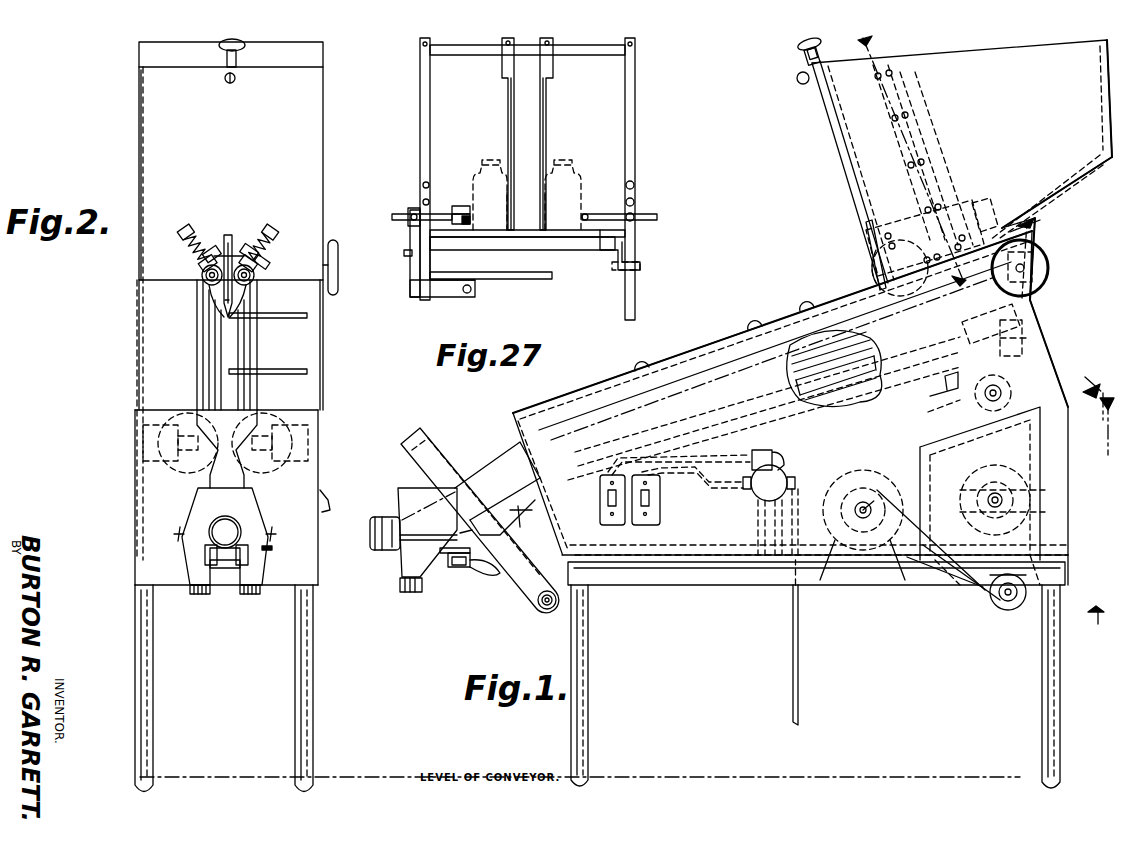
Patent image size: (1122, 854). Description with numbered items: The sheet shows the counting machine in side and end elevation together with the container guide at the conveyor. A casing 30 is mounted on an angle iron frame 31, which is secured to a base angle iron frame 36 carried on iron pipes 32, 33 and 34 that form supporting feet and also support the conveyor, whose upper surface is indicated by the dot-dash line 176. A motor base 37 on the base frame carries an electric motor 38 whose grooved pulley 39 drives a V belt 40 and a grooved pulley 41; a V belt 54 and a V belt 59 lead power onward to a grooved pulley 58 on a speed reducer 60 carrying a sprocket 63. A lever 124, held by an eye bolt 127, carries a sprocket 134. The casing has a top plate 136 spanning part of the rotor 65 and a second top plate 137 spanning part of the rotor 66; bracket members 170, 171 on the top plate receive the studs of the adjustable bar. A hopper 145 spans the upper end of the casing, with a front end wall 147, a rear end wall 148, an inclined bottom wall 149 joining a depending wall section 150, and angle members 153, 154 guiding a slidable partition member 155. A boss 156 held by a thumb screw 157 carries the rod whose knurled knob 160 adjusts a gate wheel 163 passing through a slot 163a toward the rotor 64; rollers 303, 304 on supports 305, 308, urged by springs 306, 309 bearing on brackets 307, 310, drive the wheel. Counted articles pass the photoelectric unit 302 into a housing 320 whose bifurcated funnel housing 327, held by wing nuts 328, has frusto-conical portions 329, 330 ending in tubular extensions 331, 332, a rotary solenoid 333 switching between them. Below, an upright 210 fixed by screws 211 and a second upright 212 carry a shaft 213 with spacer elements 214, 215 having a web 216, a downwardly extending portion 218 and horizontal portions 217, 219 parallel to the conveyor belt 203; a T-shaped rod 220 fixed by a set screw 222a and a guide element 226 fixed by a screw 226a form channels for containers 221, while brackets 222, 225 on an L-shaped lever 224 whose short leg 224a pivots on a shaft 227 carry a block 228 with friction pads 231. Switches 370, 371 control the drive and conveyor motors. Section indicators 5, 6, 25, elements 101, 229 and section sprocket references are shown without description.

In FIG. 1, the section line 5 is at (1098, 511).
In FIG. 1, the section line 6 is at (1056, 319).
In FIG. 1, the section line 25 is at (917, 157).
In FIG. 1, the casing 30 is at (676, 368).
In FIG. 1, the angle iron frame 31 is at (672, 538).
In FIG. 1, the iron pipe 32 is at (1054, 690).
In FIG. 2, the iron pipe 33 is at (308, 670).
In FIG. 1, the iron pipe 33 is at (586, 672).
In FIG. 2, the iron pipe 34 is at (148, 676).
In FIG. 1, the base angle iron frame 36 is at (676, 583).
In FIG. 1, the motor base 37 is at (842, 572).
In FIG. 1, the electric motor 38 is at (862, 516).
In FIG. 1, the grooved pulley 39 is at (872, 492).
In FIG. 1, the V belt 40 is at (980, 596).
In FIG. 1, the grooved pulley 41 is at (1014, 608).
In FIG. 1, the V belt 54 is at (1030, 528).
In FIG. 1, the grooved pulley 58 is at (975, 400).
In FIG. 1, the V belt 59 is at (1012, 462).
In FIG. 1, the speed reducer 60 is at (930, 396).
In FIG. 1, the sprocket 63 is at (1044, 346).
In FIG. 2, the rotor 64 is at (247, 356).
In FIG. 2, the rotor 65 is at (208, 360).
In FIG. 1, the rotor 66 is at (815, 332).
In FIG. 2, the handle 101 is at (339, 258).
In FIG. 1, the handle 101 is at (1050, 268).
In FIG. 1, the lever 124 is at (1002, 312).
In FIG. 1, the eye bolt 127 is at (1010, 340).
In FIG. 1, the sprocket 134 is at (1034, 300).
In FIG. 2, the top plate 136 is at (316, 340).
In FIG. 1, the top plate 136 is at (718, 338).
In FIG. 2, the second top plate 137 is at (140, 384).
In FIG. 2, the hopper 145 is at (316, 118).
In FIG. 1, the hopper 145 is at (940, 52).
In FIG. 2, the front end wall 147 is at (316, 146).
In FIG. 1, the front end wall 147 is at (818, 104).
In FIG. 1, the rear end wall 148 is at (1100, 80).
In FIG. 1, the inclined bottom wall 149 is at (1060, 178).
In FIG. 1, the depending wall section 150 is at (980, 225).
In FIG. 1, the angle member 153 is at (903, 154).
In FIG. 1, the angle member 154 is at (906, 124).
In FIG. 1, the partition member 155 is at (898, 86).
In FIG. 1, the boss 156 is at (816, 50).
In FIG. 2, the thumb screw 157 is at (236, 78).
In FIG. 1, the thumb screw 157 is at (800, 74).
In FIG. 2, the knurled knob 160 is at (244, 50).
In FIG. 1, the knurled knob 160 is at (800, 44).
In FIG. 2, the gate wheel 163 is at (232, 240).
In FIG. 1, the gate wheel 163 is at (866, 256).
In FIG. 2, the slot 163a is at (230, 238).
In FIG. 2, the bracket member 170 is at (270, 374).
In FIG. 1, the bracket member 170 is at (618, 376).
In FIG. 2, the bracket member 171 is at (272, 318).
In FIG. 1, the bracket member 171 is at (774, 324).
In FIG. 1, the line 176 is at (360, 772).
In FIG. 27, the conveyor belt 203 is at (516, 236).
In FIG. 27, the upright 210 is at (420, 158).
In FIG. 27, the screws 211 is at (640, 266).
In FIG. 27, the second upright 212 is at (636, 157).
In FIG. 27, the shaft 213 is at (584, 58).
In FIG. 27, the spacer element 214 is at (552, 50).
In FIG. 27, the spacer element 215 is at (506, 70).
In FIG. 27, the web 216 is at (546, 150).
In FIG. 27, the horizontal portion 217 is at (561, 211).
In FIG. 27, the downwardly extending portion 218 is at (508, 136).
In FIG. 27, the horizontal portion 219 is at (524, 211).
In FIG. 27, the T-shaped rod 220 is at (586, 212).
In FIG. 27, the containers 221 is at (470, 180).
In FIG. 27, the bracket 222 is at (658, 216).
In FIG. 27, the set screw 222a is at (636, 186).
In FIG. 27, the L-shaped lever 224 is at (413, 238).
In FIG. 27, the short leg 224a is at (446, 290).
In FIG. 27, the bracket 225 is at (406, 207).
In FIG. 27, the guide element 226 is at (470, 220).
In FIG. 27, the screw 226a is at (422, 185).
In FIG. 27, the shaft 227 is at (472, 290).
In FIG. 27, the block 228 is at (452, 208).
In FIG. 27, the nut 229 is at (408, 222).
In FIG. 27, the friction pads 231 is at (485, 217).
In FIG. 1, the photoelectric unit 302 is at (440, 458).
In FIG. 2, the roller 303 is at (255, 278).
In FIG. 1, the roller 303 is at (892, 290).
In FIG. 2, the roller 304 is at (201, 276).
In FIG. 2, the support 305 is at (207, 246).
In FIG. 2, the spring 306 is at (200, 232).
In FIG. 2, the bracket 307 is at (182, 224).
In FIG. 2, the support 308 is at (264, 258).
In FIG. 2, the spring 309 is at (278, 232).
In FIG. 2, the bracket 310 is at (274, 224).
In FIG. 2, the housing 320 is at (254, 505).
In FIG. 2, the bifurcated funnel housing 327 is at (270, 548).
In FIG. 2, the wing nuts 328 is at (176, 536).
In FIG. 2, the frusto-conical portion 329 is at (258, 566).
In FIG. 1, the frusto-conical portion 329 is at (424, 572).
In FIG. 2, the frusto-conical portion 330 is at (204, 558).
In FIG. 2, the tubular extension 331 is at (252, 596).
In FIG. 1, the tubular extension 331 is at (410, 594).
In FIG. 2, the tubular extension 332 is at (196, 594).
In FIG. 1, the rotary solenoid 333 is at (384, 556).
In FIG. 2, the switch 370 is at (320, 488).
In FIG. 1, the switch 370 is at (610, 528).
In FIG. 1, the switch 371 is at (660, 504).